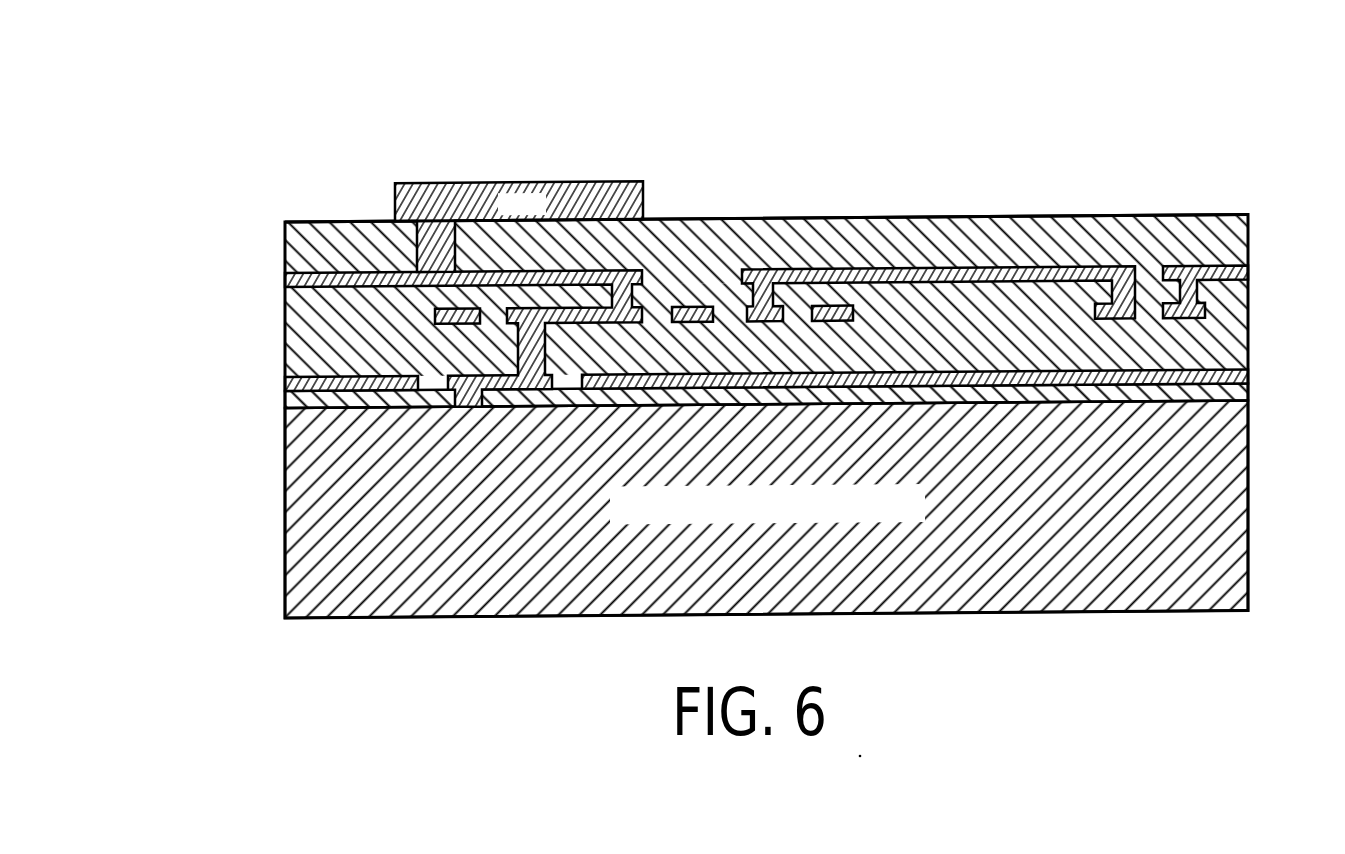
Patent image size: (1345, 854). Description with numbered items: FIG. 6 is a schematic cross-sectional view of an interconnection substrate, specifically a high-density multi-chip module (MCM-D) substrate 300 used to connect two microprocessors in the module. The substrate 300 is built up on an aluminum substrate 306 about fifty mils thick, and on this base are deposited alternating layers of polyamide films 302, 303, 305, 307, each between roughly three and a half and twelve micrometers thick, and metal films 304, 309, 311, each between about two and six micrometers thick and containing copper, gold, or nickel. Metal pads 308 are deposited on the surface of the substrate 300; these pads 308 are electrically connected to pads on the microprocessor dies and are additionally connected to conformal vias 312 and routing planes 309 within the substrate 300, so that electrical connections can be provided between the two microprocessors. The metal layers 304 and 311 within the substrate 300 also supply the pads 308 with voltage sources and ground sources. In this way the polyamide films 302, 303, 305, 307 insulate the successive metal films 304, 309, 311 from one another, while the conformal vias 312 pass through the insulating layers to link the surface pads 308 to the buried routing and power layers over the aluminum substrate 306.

The substrate 300 is at (798, 102).
The polyamide film 302 is at (283, 400).
The polyamide film 303 is at (283, 359).
The metal film 304 is at (283, 386).
The polyamide film 305 is at (283, 307).
The aluminum substrate 306 is at (1250, 581).
The polyamide film 307 is at (283, 243).
The metal pads 308 is at (583, 185).
The routing planes 309 is at (270, 341).
The metal film 311 is at (283, 282).
The conformal vias 312 is at (712, 221).